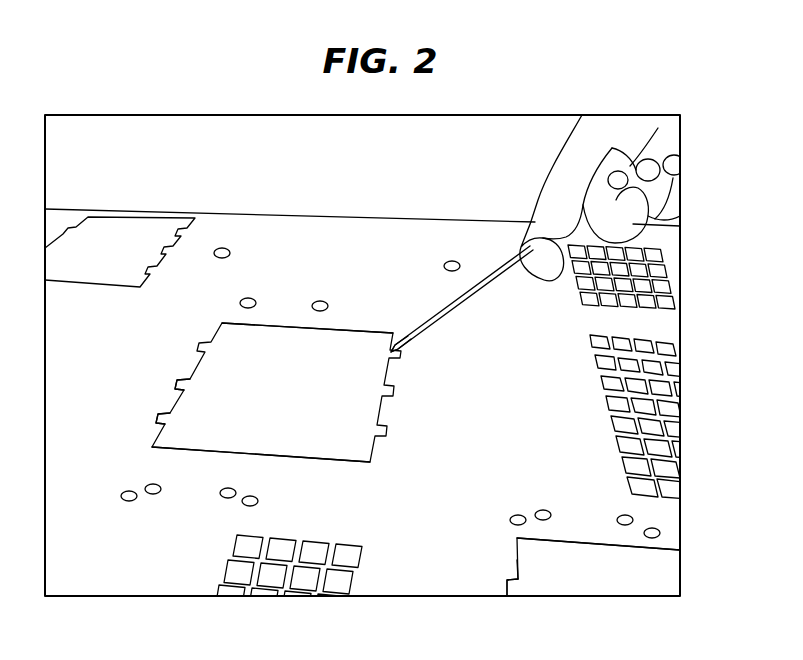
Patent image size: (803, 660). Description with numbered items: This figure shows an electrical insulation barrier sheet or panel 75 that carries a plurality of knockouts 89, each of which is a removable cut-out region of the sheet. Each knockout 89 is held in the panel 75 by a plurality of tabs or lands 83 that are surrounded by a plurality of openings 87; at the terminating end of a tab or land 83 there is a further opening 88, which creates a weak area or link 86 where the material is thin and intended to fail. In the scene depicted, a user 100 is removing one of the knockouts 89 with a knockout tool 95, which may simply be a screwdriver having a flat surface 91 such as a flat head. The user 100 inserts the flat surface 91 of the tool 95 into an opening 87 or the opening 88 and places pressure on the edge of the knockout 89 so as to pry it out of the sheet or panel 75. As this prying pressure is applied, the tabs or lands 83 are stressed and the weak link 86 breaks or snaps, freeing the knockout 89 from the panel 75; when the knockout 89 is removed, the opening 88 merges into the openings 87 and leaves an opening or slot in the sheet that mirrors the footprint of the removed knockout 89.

The electrical insulation barrier sheet 75 is at (407, 580).
The tab or land 83 is at (167, 429).
The weak area or link 86 is at (527, 597).
The opening 87 is at (368, 332).
The opening 88 is at (176, 398).
The knockout 89 is at (97, 259).
The flat surface 91 is at (411, 343).
The knockout tool 95 is at (497, 282).
The user 100 is at (538, 192).